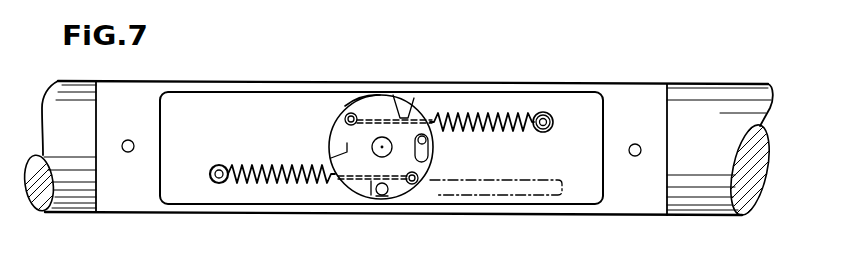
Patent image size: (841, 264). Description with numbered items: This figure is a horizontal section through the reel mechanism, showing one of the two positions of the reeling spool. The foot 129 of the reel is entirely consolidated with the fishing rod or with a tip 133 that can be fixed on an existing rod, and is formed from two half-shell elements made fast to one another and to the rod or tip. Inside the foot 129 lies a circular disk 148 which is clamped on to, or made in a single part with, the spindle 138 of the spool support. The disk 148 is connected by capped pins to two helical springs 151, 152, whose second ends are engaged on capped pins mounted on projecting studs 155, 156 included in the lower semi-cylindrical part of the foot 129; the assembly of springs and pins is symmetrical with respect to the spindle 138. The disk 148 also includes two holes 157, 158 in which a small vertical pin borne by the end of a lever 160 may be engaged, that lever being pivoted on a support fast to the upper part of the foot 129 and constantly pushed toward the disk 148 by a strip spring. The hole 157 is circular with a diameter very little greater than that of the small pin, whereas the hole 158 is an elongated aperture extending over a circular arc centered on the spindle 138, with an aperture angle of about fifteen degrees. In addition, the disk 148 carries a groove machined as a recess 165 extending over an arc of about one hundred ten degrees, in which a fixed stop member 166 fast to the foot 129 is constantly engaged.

The foot 129 is at (137, 188).
The tip 133 is at (713, 97).
The spindle 138 is at (372, 148).
The circular disk 148 is at (352, 192).
The helical spring 151 is at (303, 187).
The helical spring 152 is at (471, 112).
The projecting stud 155 is at (227, 186).
The projecting stud 156 is at (545, 112).
The hole 157 is at (381, 196).
The hole 158 is at (429, 148).
The lever 160 is at (503, 185).
The recess 165 is at (371, 103).
The fixed stop member 166 is at (408, 108).